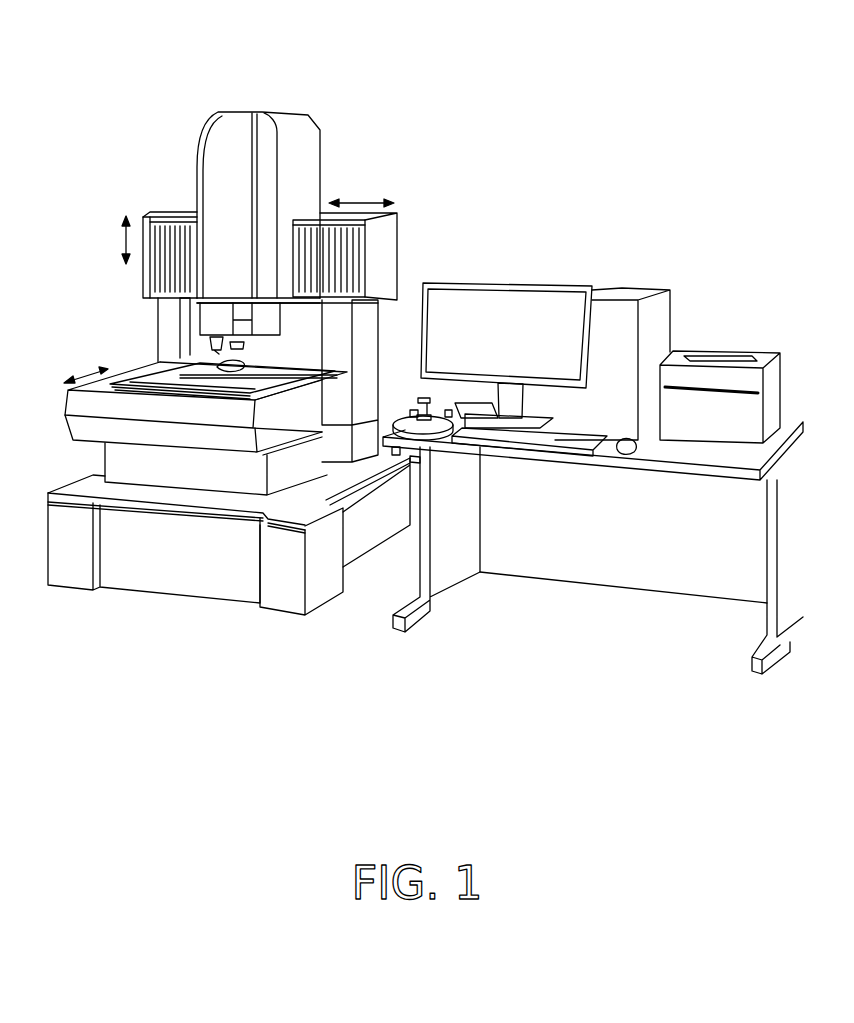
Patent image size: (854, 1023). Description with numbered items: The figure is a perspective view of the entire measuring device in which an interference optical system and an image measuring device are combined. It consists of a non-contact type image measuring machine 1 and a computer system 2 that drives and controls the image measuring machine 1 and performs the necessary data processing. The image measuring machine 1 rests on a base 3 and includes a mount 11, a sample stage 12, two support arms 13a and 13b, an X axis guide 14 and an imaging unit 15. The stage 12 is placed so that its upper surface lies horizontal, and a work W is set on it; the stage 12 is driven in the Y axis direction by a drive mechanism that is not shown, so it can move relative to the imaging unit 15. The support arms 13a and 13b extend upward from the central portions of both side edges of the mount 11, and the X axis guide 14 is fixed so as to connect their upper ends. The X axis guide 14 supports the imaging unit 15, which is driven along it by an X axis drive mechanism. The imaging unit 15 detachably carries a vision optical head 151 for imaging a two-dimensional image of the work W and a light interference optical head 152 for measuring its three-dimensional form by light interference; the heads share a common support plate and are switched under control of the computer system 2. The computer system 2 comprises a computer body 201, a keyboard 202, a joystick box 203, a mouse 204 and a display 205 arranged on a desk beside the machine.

The image measuring machine 1 is at (331, 82).
The computer system 2 is at (621, 249).
The base 3 is at (217, 570).
The mount 11 is at (83, 402).
The sample stage 12 is at (272, 367).
The support arm 13a is at (373, 330).
The support arm 13b is at (162, 348).
The X axis guide 14 is at (168, 213).
The imaging unit 15 is at (197, 148).
The vision optical head 151 is at (212, 340).
The light interference optical head 152 is at (232, 345).
The work W is at (215, 363).
The computer body 201 is at (645, 286).
The keyboard 202 is at (549, 456).
The joystick box 203 is at (442, 436).
The mouse 204 is at (620, 455).
The display 205 is at (512, 282).